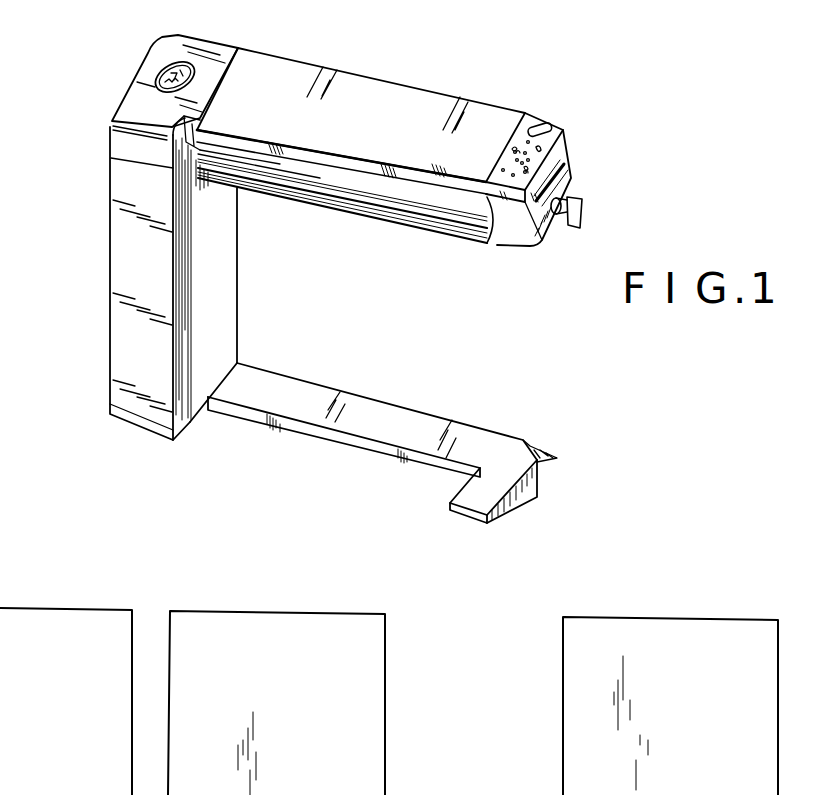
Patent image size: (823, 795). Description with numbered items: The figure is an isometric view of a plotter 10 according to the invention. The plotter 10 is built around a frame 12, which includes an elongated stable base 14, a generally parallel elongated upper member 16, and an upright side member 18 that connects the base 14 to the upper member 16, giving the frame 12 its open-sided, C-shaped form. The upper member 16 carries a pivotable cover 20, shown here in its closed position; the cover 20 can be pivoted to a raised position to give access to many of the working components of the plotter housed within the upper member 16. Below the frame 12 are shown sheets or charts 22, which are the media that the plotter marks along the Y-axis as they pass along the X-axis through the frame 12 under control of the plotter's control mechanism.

The plotter 10 is at (136, 43).
The frame 12 is at (111, 135).
The elongated stable base 14 is at (337, 437).
The elongated upper member 16 is at (553, 121).
The upright side member 18 is at (229, 286).
The pivotable cover 20 is at (360, 84).
The sheet or chart 22 is at (77, 727).